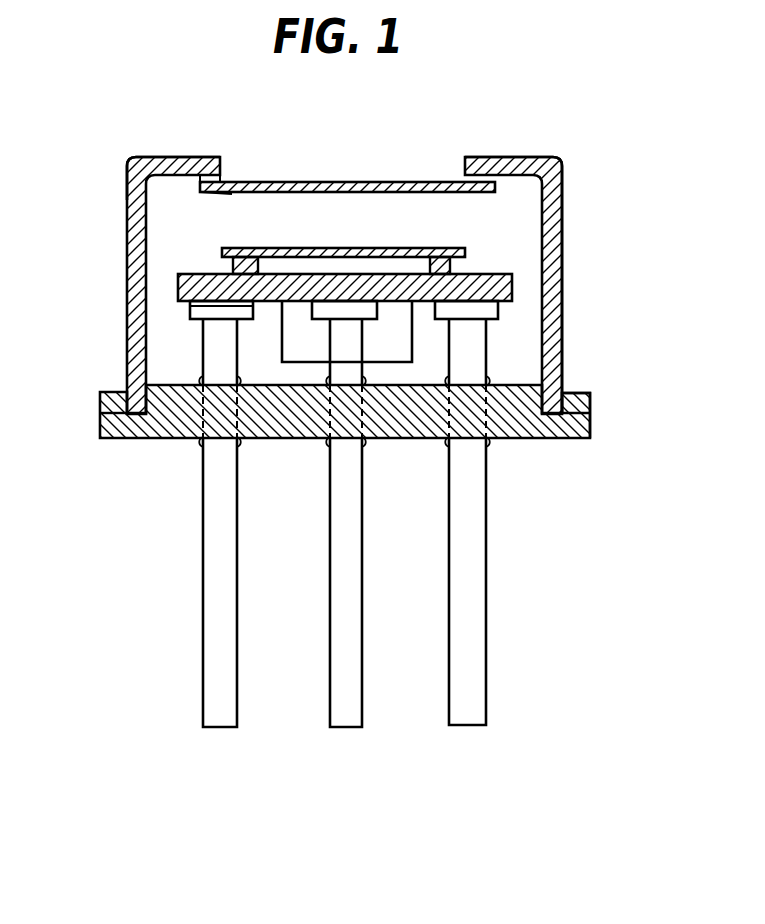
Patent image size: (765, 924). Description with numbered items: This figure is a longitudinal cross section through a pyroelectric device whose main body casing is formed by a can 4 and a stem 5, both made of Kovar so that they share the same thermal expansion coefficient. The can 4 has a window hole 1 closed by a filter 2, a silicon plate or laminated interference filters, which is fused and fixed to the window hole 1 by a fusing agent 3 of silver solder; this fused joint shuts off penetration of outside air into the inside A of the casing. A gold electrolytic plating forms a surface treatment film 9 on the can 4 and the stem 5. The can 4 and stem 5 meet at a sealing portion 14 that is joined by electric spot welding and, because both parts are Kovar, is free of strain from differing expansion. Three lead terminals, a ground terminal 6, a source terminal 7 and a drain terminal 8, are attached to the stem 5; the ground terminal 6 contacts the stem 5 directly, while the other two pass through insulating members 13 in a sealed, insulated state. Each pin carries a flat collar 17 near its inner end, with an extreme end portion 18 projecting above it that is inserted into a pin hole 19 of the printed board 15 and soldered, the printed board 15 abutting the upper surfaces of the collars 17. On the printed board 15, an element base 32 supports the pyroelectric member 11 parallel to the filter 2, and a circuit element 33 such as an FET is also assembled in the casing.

The window hole 1 is at (220, 170).
The filter 2 is at (398, 180).
The fusing agent 3 is at (200, 193).
The can 4 is at (140, 157).
The stem 5 is at (172, 440).
The ground terminal 6 is at (222, 645).
The source terminal 7 is at (338, 695).
The drain terminal 8 is at (468, 585).
The surface treatment film 9 is at (530, 155).
The pyroelectric member 11 is at (330, 247).
The insulating member 13 is at (490, 442).
The sealing portion 14 is at (573, 388).
The printed board 15 is at (515, 280).
The collar 17 is at (192, 312).
The extreme end portion 18 is at (208, 308).
The pin hole 19 is at (222, 277).
The element base 32 is at (450, 267).
The circuit element 33 is at (385, 345).
The inside of the frame member A is at (512, 226).